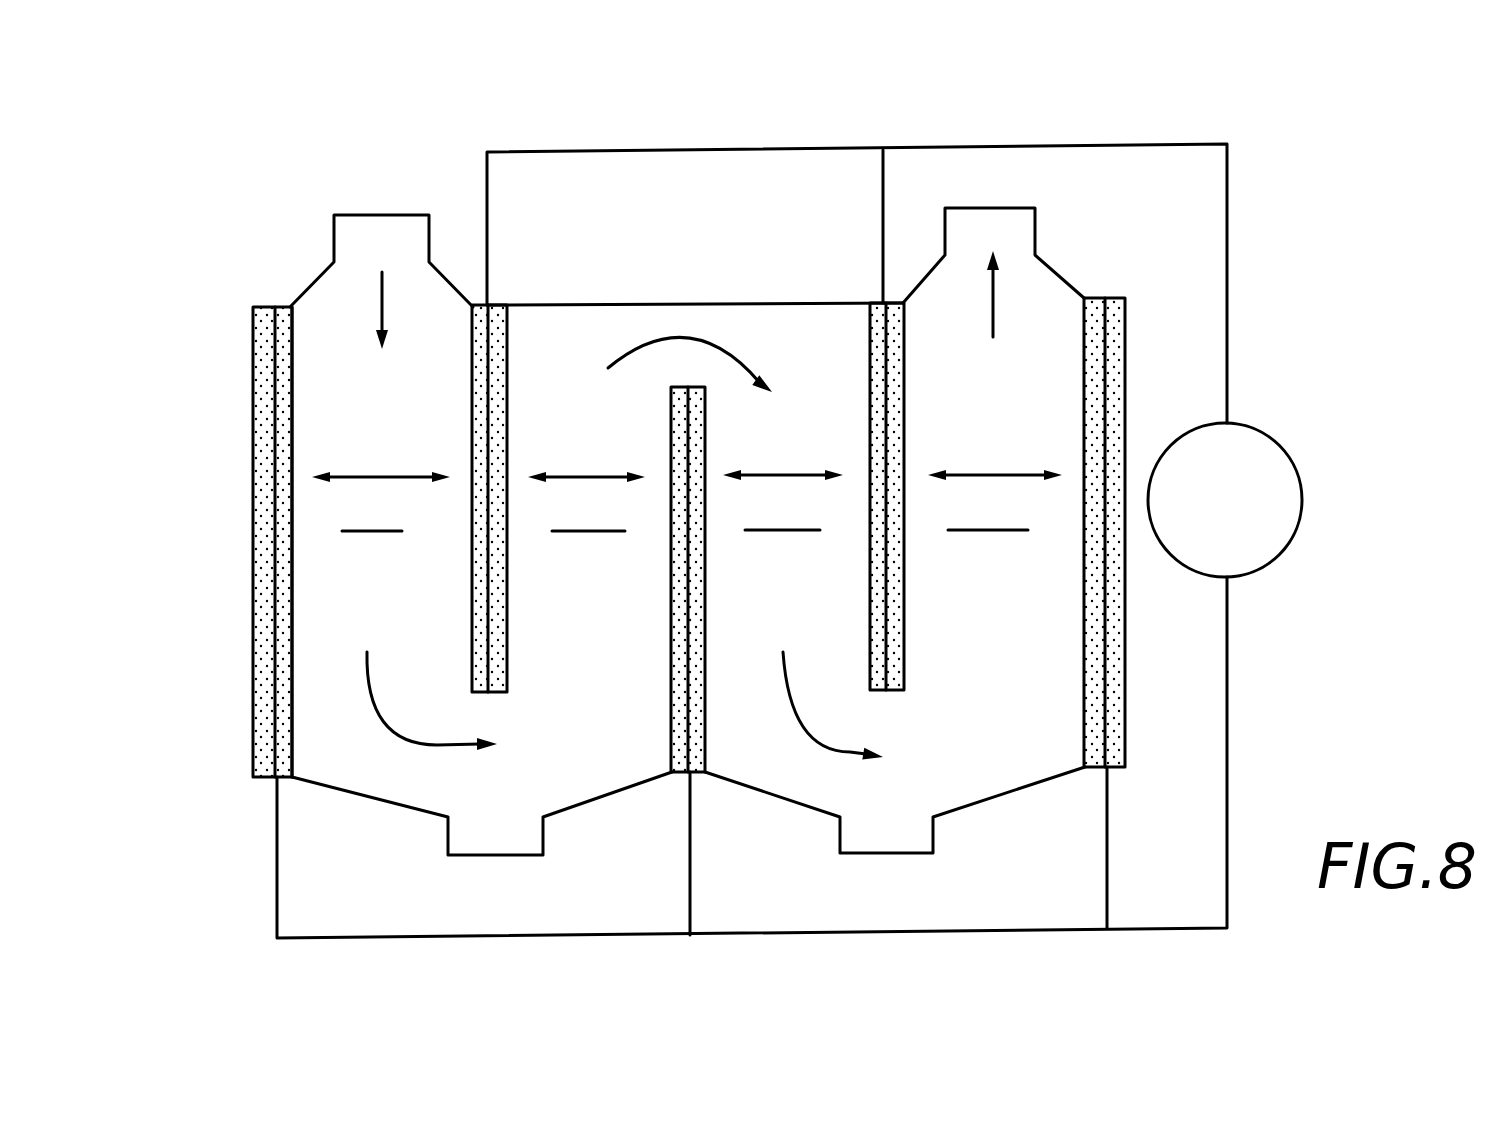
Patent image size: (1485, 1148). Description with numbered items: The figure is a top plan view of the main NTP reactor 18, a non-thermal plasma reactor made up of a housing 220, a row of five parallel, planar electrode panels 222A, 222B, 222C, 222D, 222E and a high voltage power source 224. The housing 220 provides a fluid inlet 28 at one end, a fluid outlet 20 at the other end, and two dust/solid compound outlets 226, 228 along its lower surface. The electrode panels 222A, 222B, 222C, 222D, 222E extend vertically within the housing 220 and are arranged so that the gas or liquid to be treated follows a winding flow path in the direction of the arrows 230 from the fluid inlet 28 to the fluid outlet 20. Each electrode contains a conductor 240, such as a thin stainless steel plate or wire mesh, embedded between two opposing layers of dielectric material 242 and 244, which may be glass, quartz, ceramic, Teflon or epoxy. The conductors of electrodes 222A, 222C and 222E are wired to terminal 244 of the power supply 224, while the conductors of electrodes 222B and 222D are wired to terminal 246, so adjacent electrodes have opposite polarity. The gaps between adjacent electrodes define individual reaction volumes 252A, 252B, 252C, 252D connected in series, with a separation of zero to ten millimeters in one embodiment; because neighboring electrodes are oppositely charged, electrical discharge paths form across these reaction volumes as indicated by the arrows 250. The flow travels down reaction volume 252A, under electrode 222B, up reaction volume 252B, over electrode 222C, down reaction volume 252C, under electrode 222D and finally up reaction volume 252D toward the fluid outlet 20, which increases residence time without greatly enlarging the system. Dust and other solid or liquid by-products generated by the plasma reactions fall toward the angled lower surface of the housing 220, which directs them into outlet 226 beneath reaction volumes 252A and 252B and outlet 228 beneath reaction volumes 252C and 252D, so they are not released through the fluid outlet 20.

The main NTP reactor 18 is at (448, 150).
The fluid outlet 20 is at (1000, 208).
The fluid inlet 28 is at (364, 215).
The housing 220 is at (654, 300).
The electrode panel 222A is at (292, 742).
The electrode panel 222B is at (472, 668).
The electrode panel 222C is at (672, 688).
The electrode panel 222D is at (870, 673).
The electrode panel 222E is at (1084, 697).
The high voltage power source 224 is at (1262, 435).
The dust/solid compound outlet 226 is at (525, 855).
The dust/solid compound outlet 228 is at (912, 853).
The arrows 230 is at (382, 300).
The conductor 240 is at (273, 606).
The dielectric material layer 242 is at (278, 563).
The terminal 244 is at (263, 565).
The terminal 246 is at (1227, 303).
The arrows 250 is at (357, 477).
The reaction volume 252A is at (377, 515).
The reaction volume 252B is at (588, 515).
The reaction volume 252C is at (782, 514).
The reaction volume 252D is at (988, 514).